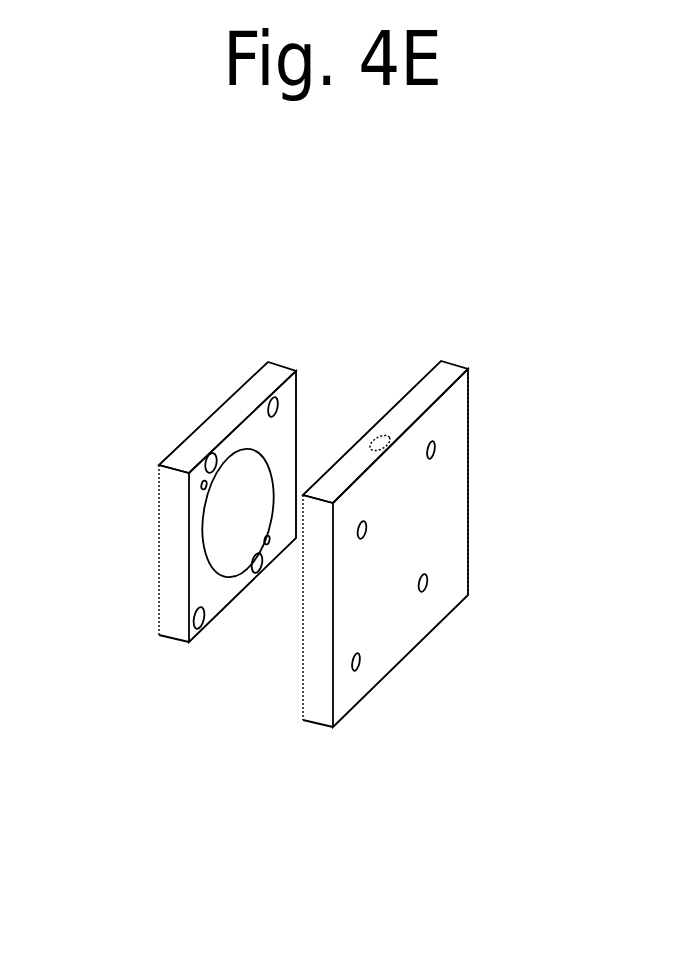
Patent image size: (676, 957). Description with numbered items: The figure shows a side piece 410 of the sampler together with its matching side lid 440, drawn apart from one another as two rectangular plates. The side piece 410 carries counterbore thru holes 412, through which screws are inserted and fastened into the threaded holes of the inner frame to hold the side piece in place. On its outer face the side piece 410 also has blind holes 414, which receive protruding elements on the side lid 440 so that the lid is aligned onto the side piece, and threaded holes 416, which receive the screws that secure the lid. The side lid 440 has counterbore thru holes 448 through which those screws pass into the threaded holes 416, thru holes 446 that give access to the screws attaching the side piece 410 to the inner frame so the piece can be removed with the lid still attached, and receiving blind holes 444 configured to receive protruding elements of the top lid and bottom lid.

The side piece 410 is at (183, 448).
The counterbore thru holes 412 is at (276, 397).
The blind holes 414 is at (211, 454).
The threaded holes 416 is at (201, 491).
The side lid 440 is at (452, 389).
The receiving blind holes 444 is at (383, 441).
The thru holes 446 is at (437, 448).
The counterbore thru holes 448 is at (428, 581).